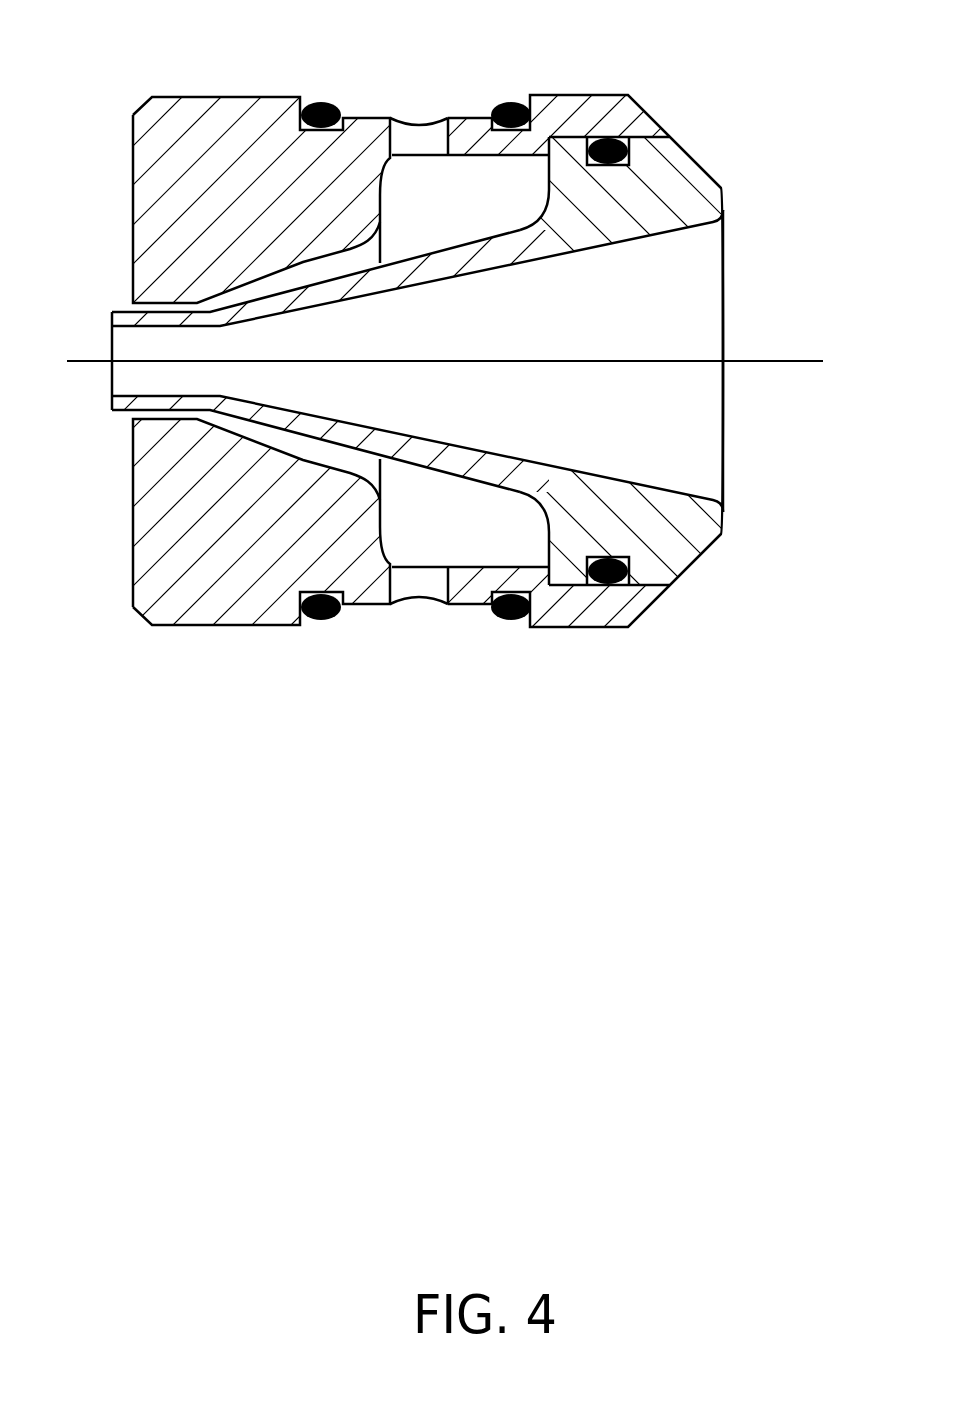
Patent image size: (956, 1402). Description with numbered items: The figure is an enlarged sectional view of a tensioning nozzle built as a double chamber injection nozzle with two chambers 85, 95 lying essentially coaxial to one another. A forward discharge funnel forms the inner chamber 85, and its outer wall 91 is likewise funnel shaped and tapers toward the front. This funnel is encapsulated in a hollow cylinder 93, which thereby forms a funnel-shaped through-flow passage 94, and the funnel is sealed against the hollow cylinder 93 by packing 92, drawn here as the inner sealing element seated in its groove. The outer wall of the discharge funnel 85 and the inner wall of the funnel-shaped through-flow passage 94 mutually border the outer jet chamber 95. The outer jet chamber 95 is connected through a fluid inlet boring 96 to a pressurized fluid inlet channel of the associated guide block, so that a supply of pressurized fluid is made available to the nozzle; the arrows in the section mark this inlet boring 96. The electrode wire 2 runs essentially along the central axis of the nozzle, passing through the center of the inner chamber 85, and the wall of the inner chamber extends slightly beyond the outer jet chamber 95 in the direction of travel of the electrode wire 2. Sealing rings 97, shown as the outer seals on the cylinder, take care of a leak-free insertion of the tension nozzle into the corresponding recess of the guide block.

The electrode wire 2 is at (778, 360).
The inner chamber 85 is at (578, 329).
The outer wall 91 is at (406, 480).
The packing 92 is at (594, 586).
The hollow cylinder 93 is at (183, 122).
The through-flow passage 94 is at (330, 453).
The outer jet chamber 95 is at (466, 212).
The fluid inlet boring 96 is at (418, 100).
The sealing rings 97 is at (320, 97).